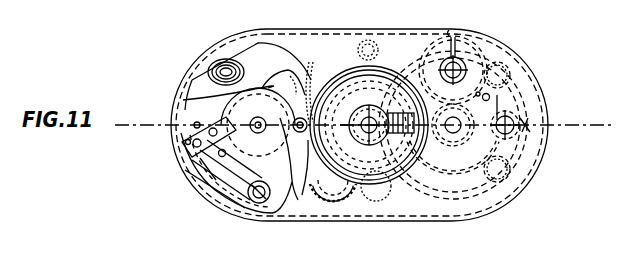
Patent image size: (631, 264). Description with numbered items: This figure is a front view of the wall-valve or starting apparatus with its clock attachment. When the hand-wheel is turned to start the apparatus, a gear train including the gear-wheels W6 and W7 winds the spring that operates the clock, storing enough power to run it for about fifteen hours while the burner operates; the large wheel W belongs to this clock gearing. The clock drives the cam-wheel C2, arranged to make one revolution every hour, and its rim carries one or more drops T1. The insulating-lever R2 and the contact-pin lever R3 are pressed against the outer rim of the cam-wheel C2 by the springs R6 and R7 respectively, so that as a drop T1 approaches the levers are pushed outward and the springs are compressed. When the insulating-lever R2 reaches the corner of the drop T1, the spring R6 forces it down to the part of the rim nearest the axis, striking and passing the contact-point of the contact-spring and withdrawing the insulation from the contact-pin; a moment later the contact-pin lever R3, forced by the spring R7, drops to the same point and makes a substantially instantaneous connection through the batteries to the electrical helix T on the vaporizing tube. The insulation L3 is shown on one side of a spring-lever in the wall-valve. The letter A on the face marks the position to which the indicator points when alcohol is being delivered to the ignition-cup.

The main wheel W is at (373, 100).
The gear-wheel W6 is at (333, 197).
The gear-wheel W7 is at (303, 78).
The electrical helix T is at (260, 91).
The drop T1 is at (298, 200).
The cam-wheel C2 is at (270, 192).
The contact-pin lever R3 is at (215, 144).
The insulation L3 is at (206, 170).
The spring R7 is at (228, 170).
The insulating-lever R2 is at (237, 183).
The spring R6 is at (226, 185).
The letter A is at (431, 107).